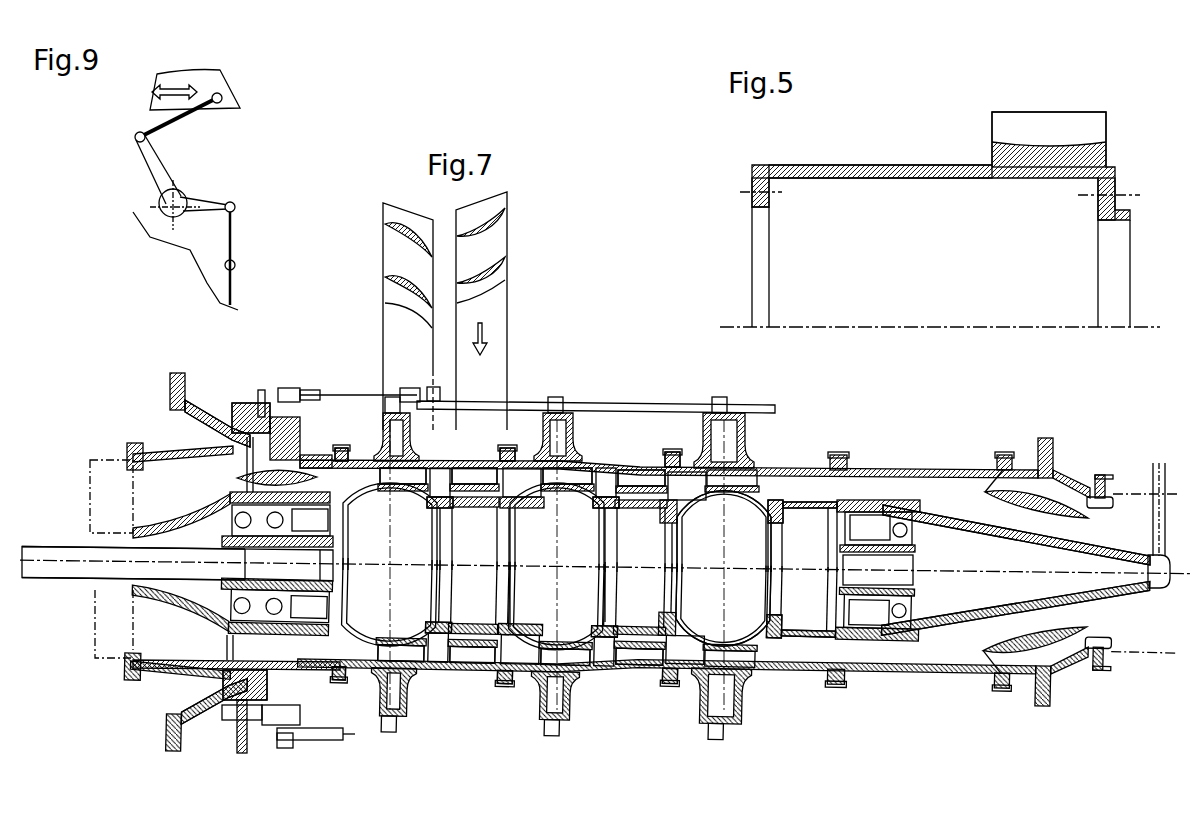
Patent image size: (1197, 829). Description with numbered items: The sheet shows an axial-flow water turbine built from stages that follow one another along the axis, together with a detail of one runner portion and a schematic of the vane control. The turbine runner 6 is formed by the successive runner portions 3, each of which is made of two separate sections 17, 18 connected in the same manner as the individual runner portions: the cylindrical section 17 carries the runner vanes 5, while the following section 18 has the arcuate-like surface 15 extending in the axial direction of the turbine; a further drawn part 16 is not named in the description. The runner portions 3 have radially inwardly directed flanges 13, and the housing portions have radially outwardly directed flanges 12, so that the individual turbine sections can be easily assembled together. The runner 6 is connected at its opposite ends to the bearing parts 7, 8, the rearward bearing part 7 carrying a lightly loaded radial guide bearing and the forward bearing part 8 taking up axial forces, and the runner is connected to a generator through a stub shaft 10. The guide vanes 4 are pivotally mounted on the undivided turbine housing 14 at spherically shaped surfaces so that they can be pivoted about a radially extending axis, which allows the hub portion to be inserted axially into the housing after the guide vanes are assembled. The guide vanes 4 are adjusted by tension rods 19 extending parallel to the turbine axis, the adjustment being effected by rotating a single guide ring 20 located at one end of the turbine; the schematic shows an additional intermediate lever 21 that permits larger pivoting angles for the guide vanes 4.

In FIG. 5, the runner portion 3 is at (898, 175).
In FIG. 7, the runner portion 3 is at (802, 622).
In FIG. 7, the guide vanes 4 is at (392, 462).
In FIG. 5, the runner vanes 5 is at (1098, 137).
In FIG. 7, the runner vanes 5 is at (473, 483).
In FIG. 7, the turbine runner 6 is at (745, 522).
In FIG. 7, the bearing part 7 is at (887, 502).
In FIG. 7, the forward bearing part 8 is at (193, 488).
In FIG. 7, the stub shaft 10 is at (77, 562).
In FIG. 7, the flanges 12 is at (340, 445).
In FIG. 5, the flanges 13 is at (770, 208).
In FIG. 7, the flanges 13 is at (607, 513).
In FIG. 7, the turbine housing 14 is at (605, 458).
In FIG. 7, the arcuate-like surface 15 is at (530, 650).
In FIG. 7, the spacer ring 16 is at (587, 677).
In FIG. 7, the cylindrical section 17 is at (635, 632).
In FIG. 7, the section 18 is at (493, 677).
In FIG. 9, the tension rods 19 is at (233, 239).
In FIG. 7, the tension rods 19 is at (568, 407).
In FIG. 9, the guide ring 20 is at (238, 95).
In FIG. 7, the guide ring 20 is at (245, 378).
In FIG. 9, the intermediate lever 21 is at (197, 197).